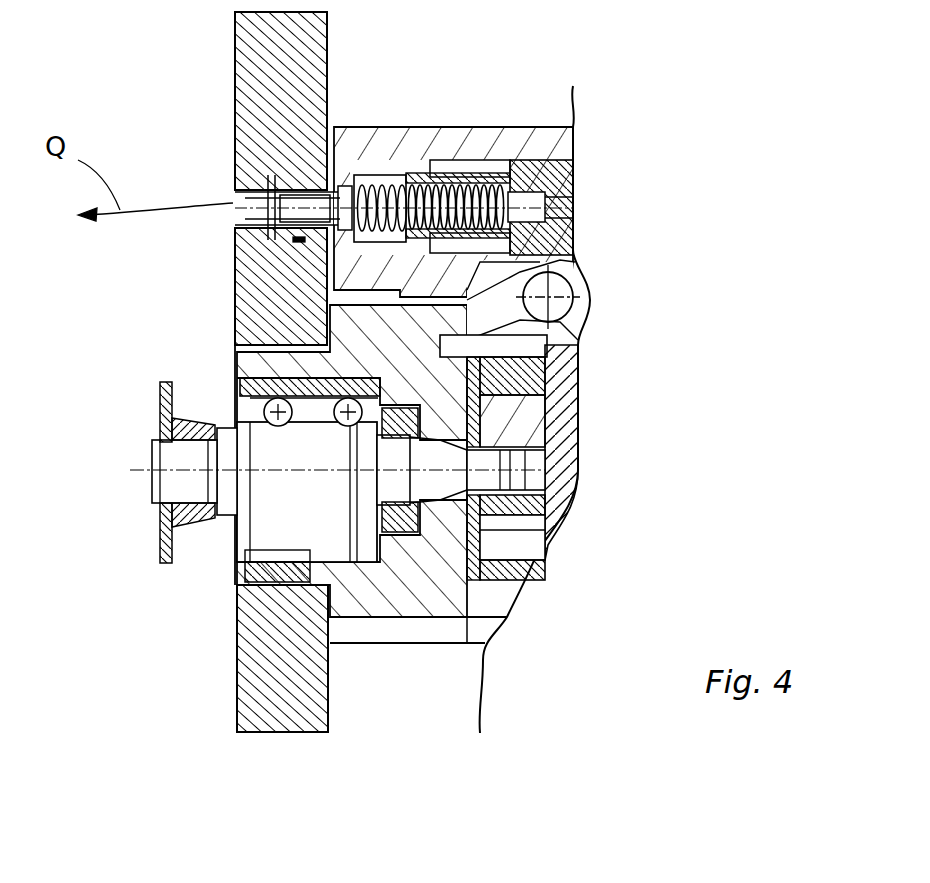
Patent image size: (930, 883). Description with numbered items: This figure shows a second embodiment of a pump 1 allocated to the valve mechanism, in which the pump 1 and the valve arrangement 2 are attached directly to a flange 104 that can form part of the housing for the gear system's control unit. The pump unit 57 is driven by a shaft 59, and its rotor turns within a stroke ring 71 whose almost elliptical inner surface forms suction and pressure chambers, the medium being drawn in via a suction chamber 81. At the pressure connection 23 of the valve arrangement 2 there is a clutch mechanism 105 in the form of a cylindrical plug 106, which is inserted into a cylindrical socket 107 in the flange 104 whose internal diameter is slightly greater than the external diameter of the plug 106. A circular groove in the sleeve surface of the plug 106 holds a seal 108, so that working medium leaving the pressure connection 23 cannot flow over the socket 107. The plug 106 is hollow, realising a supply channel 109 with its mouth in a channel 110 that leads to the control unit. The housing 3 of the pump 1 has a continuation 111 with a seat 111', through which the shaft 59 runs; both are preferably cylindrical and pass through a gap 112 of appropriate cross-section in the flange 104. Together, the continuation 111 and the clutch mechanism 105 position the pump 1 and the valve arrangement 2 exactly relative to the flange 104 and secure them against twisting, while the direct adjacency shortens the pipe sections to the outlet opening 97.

The pump 1 is at (407, 572).
The valve arrangement 2 is at (477, 113).
The housing 3 is at (360, 600).
The pressure connection 23 is at (333, 173).
The pump unit 57 is at (558, 422).
The shaft 59 is at (318, 531).
The stroke ring 71 is at (530, 582).
The suction chamber 81 is at (547, 346).
The outlet opening 97 is at (575, 253).
The flange 104 is at (310, 56).
The clutch mechanism 105 is at (235, 74).
The cylindrical plug 106 is at (300, 225).
The socket 107 is at (245, 210).
The seal 108 is at (298, 240).
The supply channel 109 is at (260, 212).
The channel 110 is at (243, 202).
The continuation 111 is at (235, 627).
The seat 111' is at (201, 606).
The gap 112 is at (238, 586).